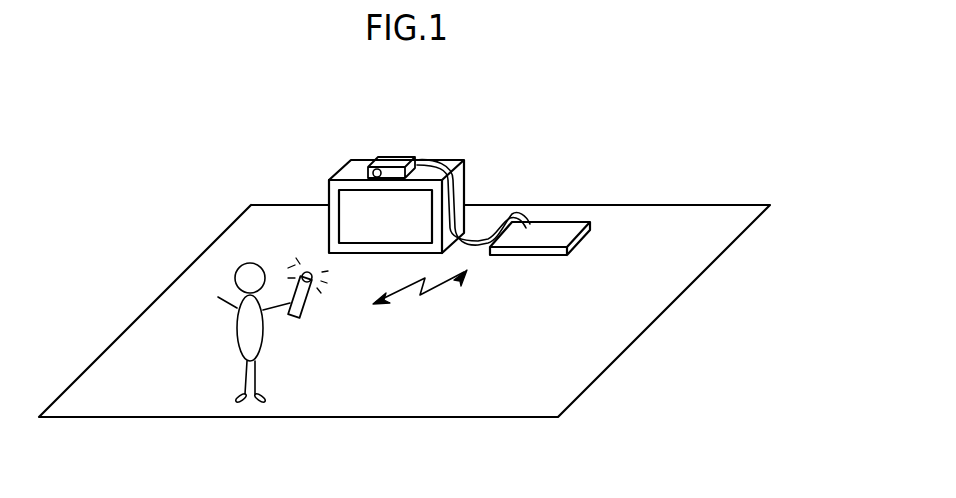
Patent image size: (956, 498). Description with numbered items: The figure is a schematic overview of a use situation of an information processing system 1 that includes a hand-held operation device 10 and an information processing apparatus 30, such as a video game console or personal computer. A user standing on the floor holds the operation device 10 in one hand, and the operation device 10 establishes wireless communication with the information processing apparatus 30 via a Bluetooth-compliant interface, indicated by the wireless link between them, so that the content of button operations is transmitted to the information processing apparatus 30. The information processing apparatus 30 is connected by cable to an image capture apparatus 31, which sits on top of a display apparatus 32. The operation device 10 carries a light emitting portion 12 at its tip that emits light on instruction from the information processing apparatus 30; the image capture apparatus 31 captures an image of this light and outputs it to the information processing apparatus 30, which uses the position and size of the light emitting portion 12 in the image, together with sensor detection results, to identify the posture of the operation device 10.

The information processing system 1 is at (605, 197).
The operation device 10 is at (308, 307).
The light emitting portion 12 is at (307, 272).
The information processing apparatus 30 is at (546, 256).
The image capture apparatus 31 is at (396, 157).
The display apparatus 32 is at (329, 185).